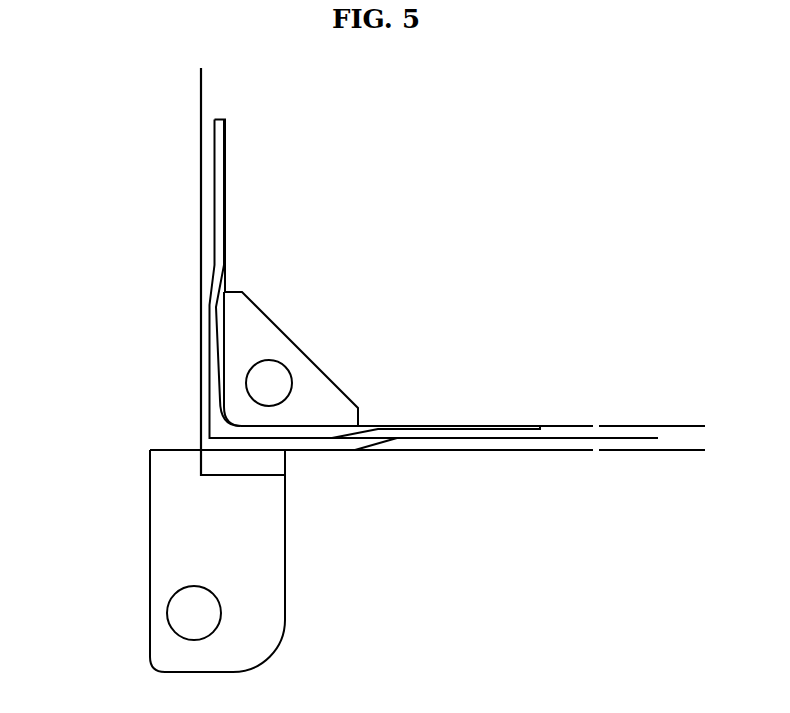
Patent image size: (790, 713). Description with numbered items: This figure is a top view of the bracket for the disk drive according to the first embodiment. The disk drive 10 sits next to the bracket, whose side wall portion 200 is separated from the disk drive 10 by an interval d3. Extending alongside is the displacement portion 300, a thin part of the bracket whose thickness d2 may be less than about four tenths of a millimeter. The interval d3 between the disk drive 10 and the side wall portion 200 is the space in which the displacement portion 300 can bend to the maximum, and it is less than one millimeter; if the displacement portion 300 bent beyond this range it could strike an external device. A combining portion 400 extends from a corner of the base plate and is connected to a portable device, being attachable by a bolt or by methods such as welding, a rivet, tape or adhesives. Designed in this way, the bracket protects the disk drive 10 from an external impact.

The disk drive 10 is at (420, 248).
The side wall portion 200 is at (310, 444).
The displacement portion 300 is at (490, 431).
The combining portion 400 is at (182, 535).
The thickness of the displacement portion d2 is at (647, 497).
The interval between the disk drive and the side wall portion d3 is at (693, 497).